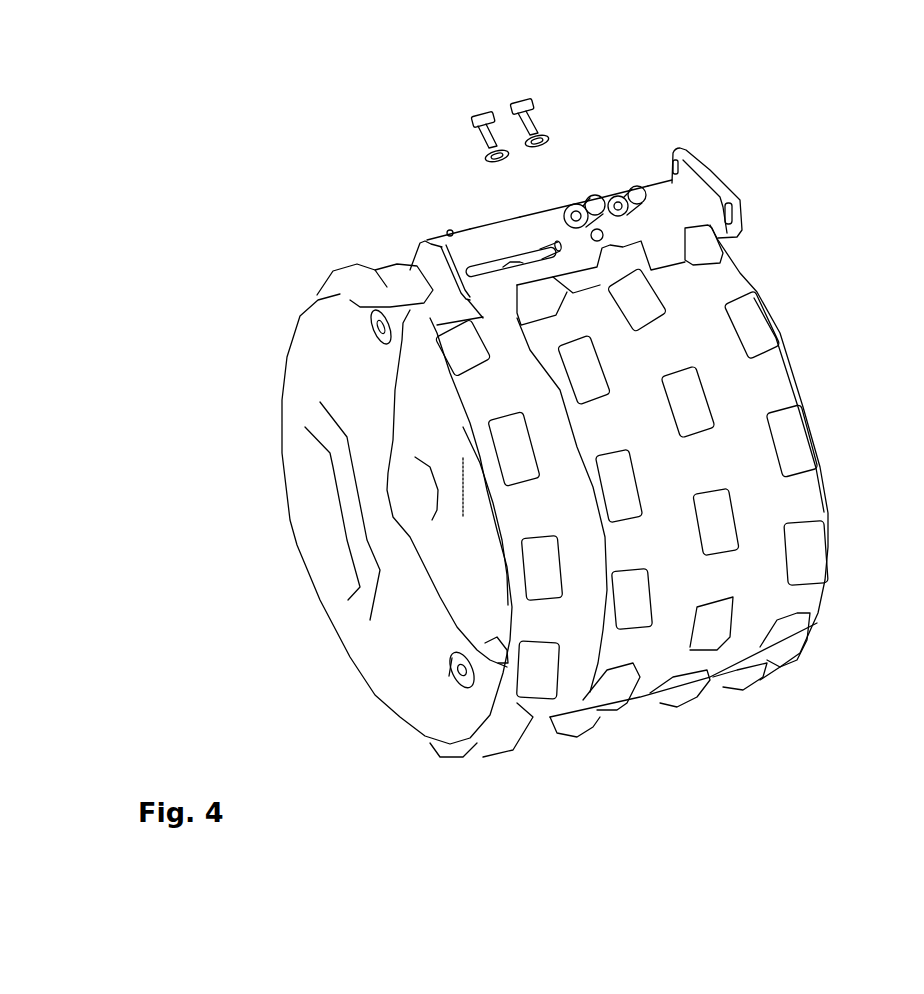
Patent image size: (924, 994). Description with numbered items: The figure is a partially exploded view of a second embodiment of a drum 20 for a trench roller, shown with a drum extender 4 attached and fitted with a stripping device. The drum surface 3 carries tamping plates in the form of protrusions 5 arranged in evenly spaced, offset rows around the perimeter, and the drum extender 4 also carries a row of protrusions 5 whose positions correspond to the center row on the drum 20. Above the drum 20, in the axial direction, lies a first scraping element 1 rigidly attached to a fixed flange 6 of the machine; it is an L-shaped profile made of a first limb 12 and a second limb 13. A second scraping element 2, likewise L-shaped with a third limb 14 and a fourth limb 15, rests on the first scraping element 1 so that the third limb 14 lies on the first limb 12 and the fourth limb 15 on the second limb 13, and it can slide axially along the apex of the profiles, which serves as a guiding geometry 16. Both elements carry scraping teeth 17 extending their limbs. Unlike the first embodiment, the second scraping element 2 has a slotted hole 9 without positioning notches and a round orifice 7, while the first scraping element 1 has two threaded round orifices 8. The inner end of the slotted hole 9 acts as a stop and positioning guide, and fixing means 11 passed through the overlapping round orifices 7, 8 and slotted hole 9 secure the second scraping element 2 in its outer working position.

The first scraping element 1 is at (685, 198).
The second scraping element 2 is at (468, 252).
The drum surface 3 is at (726, 280).
The drum extender 4 is at (333, 293).
The protrusions 5 is at (405, 283).
The flange 6 is at (725, 187).
The round orifice 7 is at (620, 232).
The round orifices 8 is at (561, 244).
The slotted hole 9 is at (525, 253).
The fixing means 11 is at (520, 99).
The first limb 12 is at (658, 207).
The second limb 13 is at (648, 186).
The third limb 14 is at (482, 238).
The fourth limb 15 is at (493, 220).
The guiding geometry 16 is at (449, 232).
The scraping teeth 17 is at (670, 250).
The drum 20 is at (248, 167).